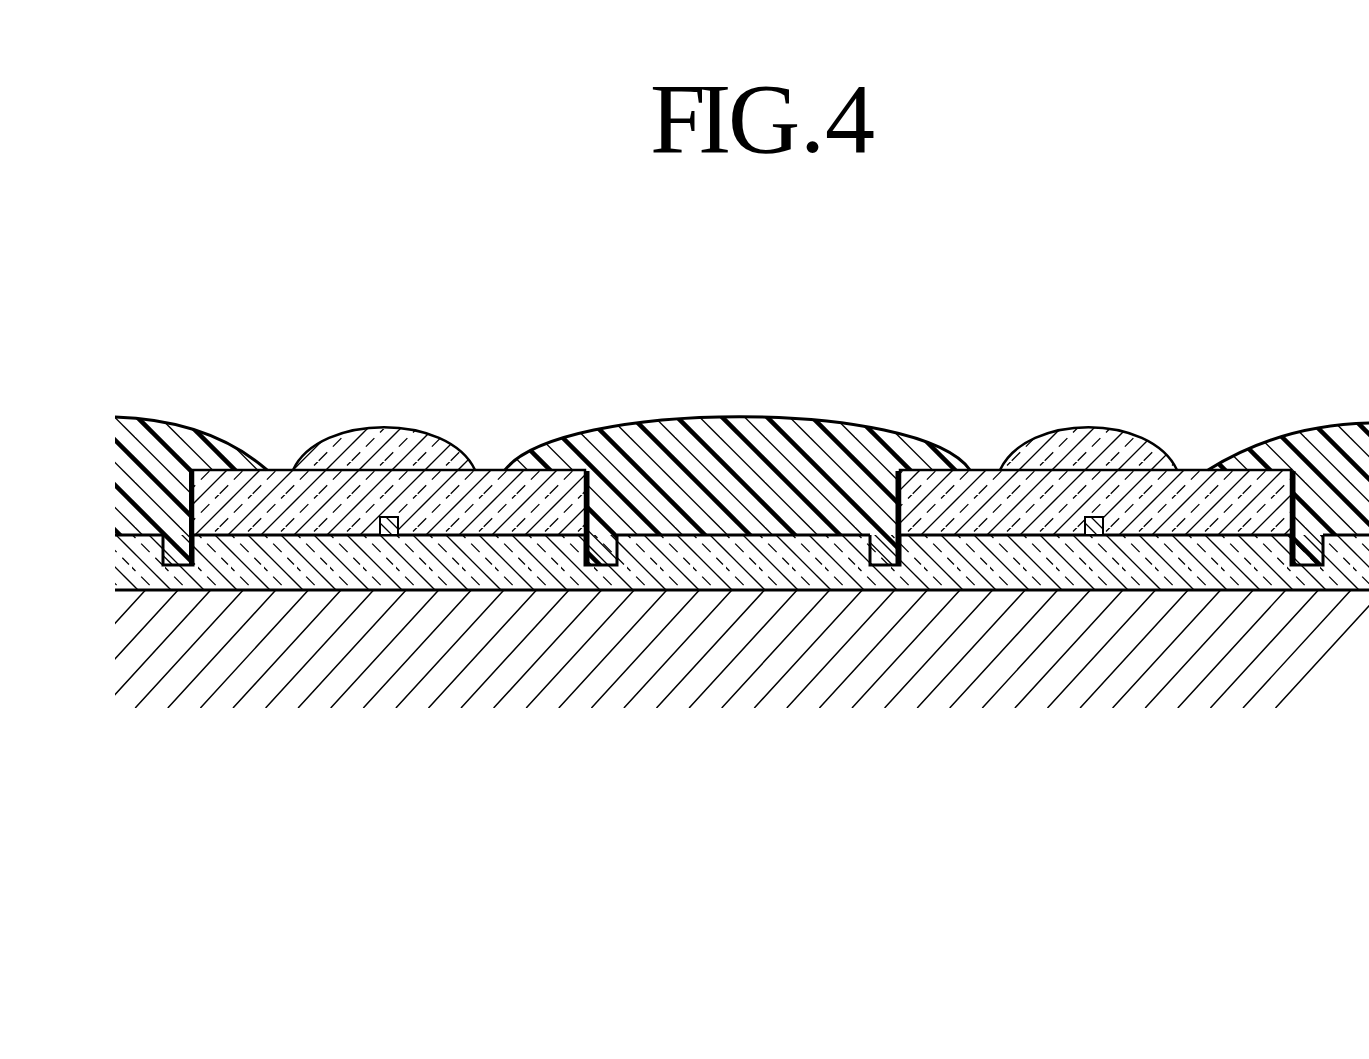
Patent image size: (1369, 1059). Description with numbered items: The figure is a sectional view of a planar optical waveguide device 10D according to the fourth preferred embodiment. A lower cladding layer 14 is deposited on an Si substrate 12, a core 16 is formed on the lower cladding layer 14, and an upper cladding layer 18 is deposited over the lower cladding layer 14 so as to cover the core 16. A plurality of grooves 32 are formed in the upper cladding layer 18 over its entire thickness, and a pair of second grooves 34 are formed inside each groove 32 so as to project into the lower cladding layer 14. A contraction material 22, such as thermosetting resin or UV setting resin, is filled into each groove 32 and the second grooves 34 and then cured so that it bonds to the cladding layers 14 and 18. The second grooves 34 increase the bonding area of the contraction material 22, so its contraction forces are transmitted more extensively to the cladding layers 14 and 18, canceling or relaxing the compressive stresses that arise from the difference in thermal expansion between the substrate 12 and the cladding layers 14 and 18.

The planar optical waveguide device 10D is at (814, 386).
The Si substrate 12 is at (735, 693).
The lower cladding layer 14 is at (283, 540).
The core 16 is at (388, 517).
The upper cladding layer 18 is at (412, 478).
The contraction material 22 is at (138, 468).
The groove 32 is at (190, 470).
The second groove 34 is at (178, 568).